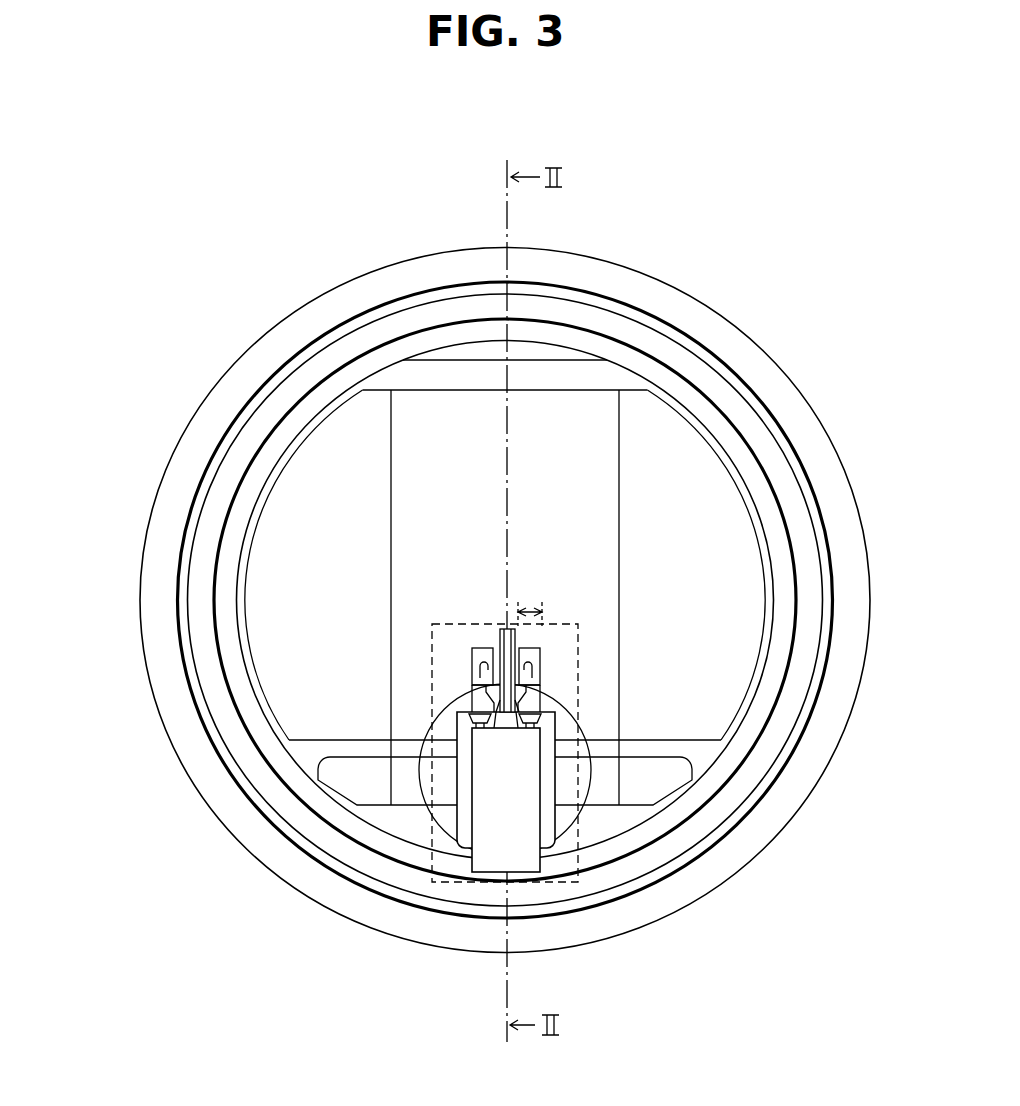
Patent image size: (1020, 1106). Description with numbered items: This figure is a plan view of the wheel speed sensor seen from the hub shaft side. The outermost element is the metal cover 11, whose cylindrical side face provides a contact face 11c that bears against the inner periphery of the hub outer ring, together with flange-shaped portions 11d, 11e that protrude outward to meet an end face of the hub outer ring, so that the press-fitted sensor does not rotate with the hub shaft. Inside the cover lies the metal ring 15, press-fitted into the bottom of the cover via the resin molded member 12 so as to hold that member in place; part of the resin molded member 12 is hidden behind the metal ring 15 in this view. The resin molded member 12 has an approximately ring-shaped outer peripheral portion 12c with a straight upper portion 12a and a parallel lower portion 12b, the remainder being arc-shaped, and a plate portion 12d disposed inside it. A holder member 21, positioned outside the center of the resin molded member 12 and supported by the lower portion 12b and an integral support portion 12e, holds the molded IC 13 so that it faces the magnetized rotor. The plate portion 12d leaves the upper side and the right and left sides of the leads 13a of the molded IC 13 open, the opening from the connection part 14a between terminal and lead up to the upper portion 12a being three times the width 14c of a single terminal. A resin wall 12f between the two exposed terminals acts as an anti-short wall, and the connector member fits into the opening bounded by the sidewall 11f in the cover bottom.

The cover 11 is at (815, 203).
The contact face 11c is at (685, 338).
The flange-shaped portion 11d is at (740, 348).
The flange-shaped portion 11e is at (645, 333).
The sidewall 11f is at (583, 733).
The resin molded member 12 is at (359, 372).
The upper portion 12a is at (458, 377).
The lower portion 12b is at (397, 815).
The outer peripheral portion 12c is at (422, 378).
The plate portion 12d is at (320, 490).
The support portion 12e is at (355, 747).
The resin wall 12f is at (500, 630).
The molded IC 13 is at (487, 865).
The leads 13a is at (471, 687).
The connection part 14a is at (472, 648).
The width 14c is at (532, 601).
The metal ring 15 is at (588, 338).
The holder member 21 is at (547, 828).